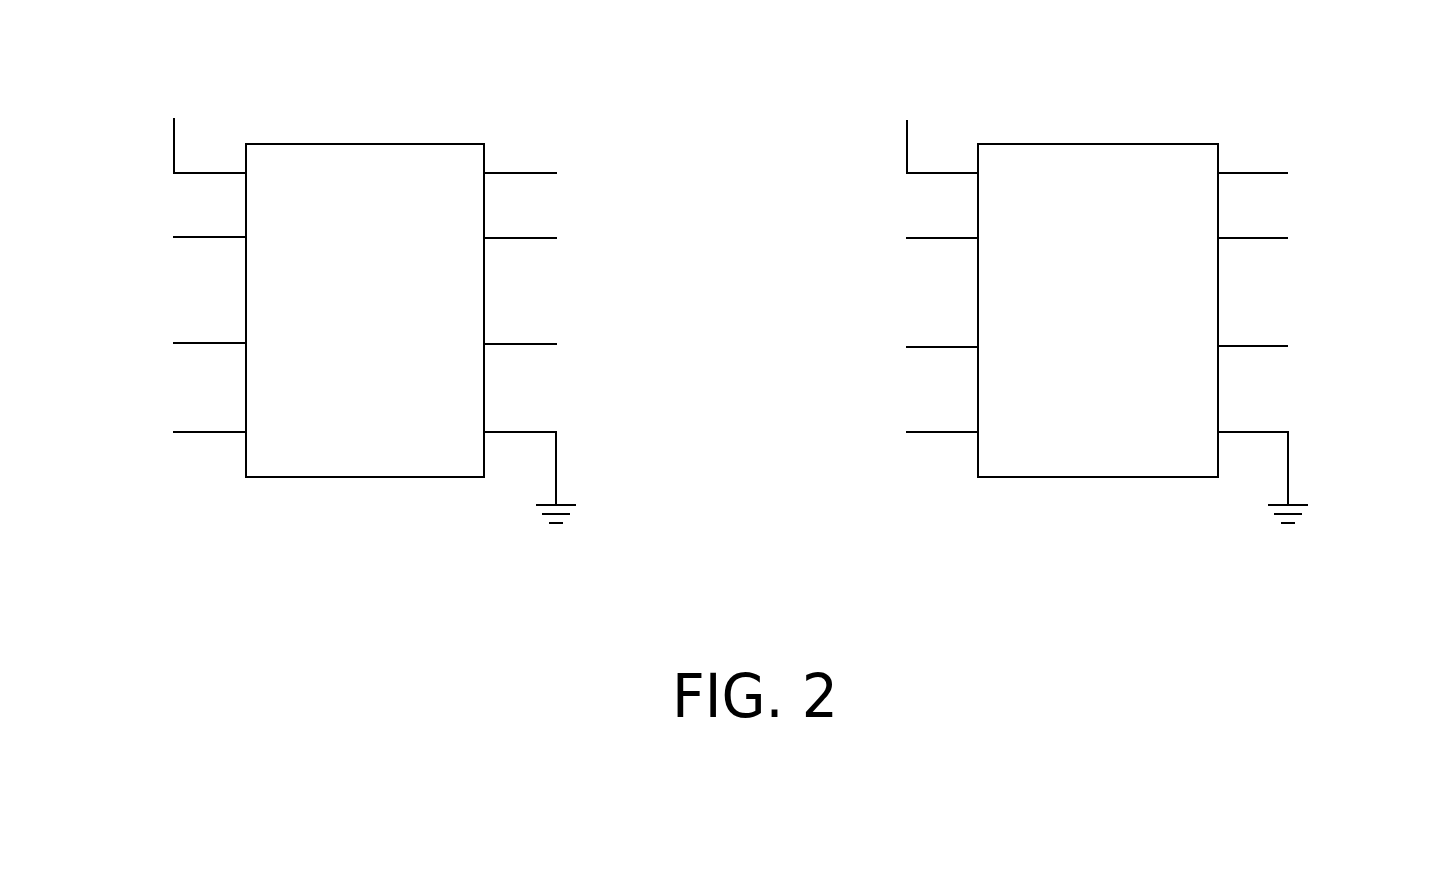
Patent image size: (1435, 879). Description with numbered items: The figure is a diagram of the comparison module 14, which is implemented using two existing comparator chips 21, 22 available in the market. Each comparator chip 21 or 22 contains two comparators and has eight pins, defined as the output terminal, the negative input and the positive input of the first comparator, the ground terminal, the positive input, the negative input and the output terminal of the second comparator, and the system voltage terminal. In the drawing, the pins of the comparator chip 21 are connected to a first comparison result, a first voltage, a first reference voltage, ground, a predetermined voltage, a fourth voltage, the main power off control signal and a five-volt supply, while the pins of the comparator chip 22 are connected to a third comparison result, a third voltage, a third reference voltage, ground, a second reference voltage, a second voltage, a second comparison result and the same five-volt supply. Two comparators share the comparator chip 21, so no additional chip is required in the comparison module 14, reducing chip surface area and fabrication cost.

The comparison module 14 is at (1395, 619).
The comparator chip 21 is at (364, 143).
The comparator chip 22 is at (1097, 144).